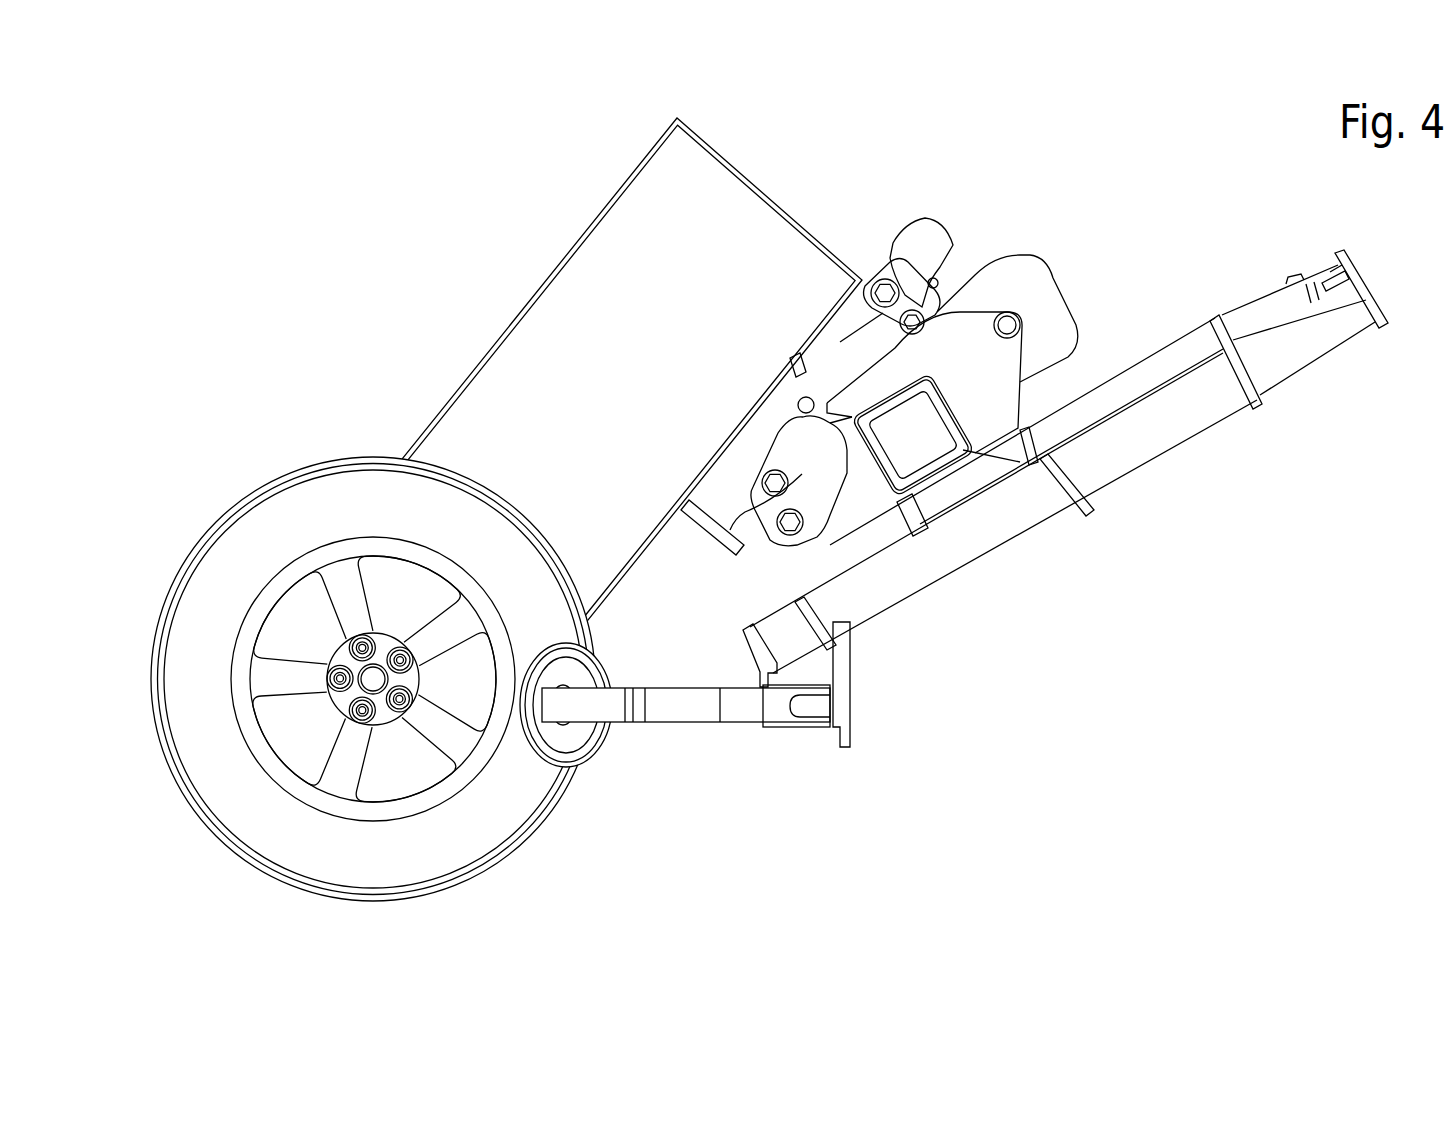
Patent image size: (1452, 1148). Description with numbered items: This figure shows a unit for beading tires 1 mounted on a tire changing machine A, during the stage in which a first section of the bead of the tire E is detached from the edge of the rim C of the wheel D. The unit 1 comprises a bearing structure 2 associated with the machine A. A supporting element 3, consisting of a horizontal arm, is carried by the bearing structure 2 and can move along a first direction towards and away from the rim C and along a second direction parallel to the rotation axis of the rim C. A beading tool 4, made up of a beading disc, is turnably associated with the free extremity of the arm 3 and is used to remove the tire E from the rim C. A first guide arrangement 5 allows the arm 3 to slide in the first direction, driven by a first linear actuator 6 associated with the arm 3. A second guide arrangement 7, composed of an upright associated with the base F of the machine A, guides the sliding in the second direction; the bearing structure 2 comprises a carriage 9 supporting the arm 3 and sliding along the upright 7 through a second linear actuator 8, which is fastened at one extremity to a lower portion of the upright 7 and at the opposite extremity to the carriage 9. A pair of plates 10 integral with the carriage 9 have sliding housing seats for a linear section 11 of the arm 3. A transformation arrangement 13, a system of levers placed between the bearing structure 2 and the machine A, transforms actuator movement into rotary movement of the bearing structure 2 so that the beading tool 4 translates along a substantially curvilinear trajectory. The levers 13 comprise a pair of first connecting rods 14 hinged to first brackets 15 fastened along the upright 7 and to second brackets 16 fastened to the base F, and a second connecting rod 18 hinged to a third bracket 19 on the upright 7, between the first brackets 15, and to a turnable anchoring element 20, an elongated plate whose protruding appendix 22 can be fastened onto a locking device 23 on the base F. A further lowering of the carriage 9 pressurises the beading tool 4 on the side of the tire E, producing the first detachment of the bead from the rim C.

The unit for beading tires 1 is at (1233, 768).
The bearing structure 2 is at (928, 509).
The supporting element 3 is at (673, 703).
The beading tool 4 is at (583, 740).
The first guide arrangement 5 is at (1165, 315).
The first linear actuator 6 is at (1247, 323).
The second guide arrangement 7 is at (930, 442).
The second linear actuator 8 is at (1035, 305).
The carriage 9 is at (977, 343).
The plates 10 is at (1260, 407).
The linear section 11 is at (1140, 430).
The transformation arrangement 13 is at (877, 542).
The first connecting rods 14 is at (928, 243).
The first brackets 15 is at (920, 290).
The second brackets 16 is at (866, 270).
The second connecting rod 18 is at (770, 543).
The third bracket 19 is at (827, 527).
The anchoring element 20 is at (800, 355).
The protruding appendix 22 is at (705, 540).
The locking device 23 is at (724, 570).
The tire changing machine A is at (414, 257).
The rim C is at (343, 580).
The wheel D is at (196, 500).
The tire E is at (255, 793).
The base F is at (624, 254).